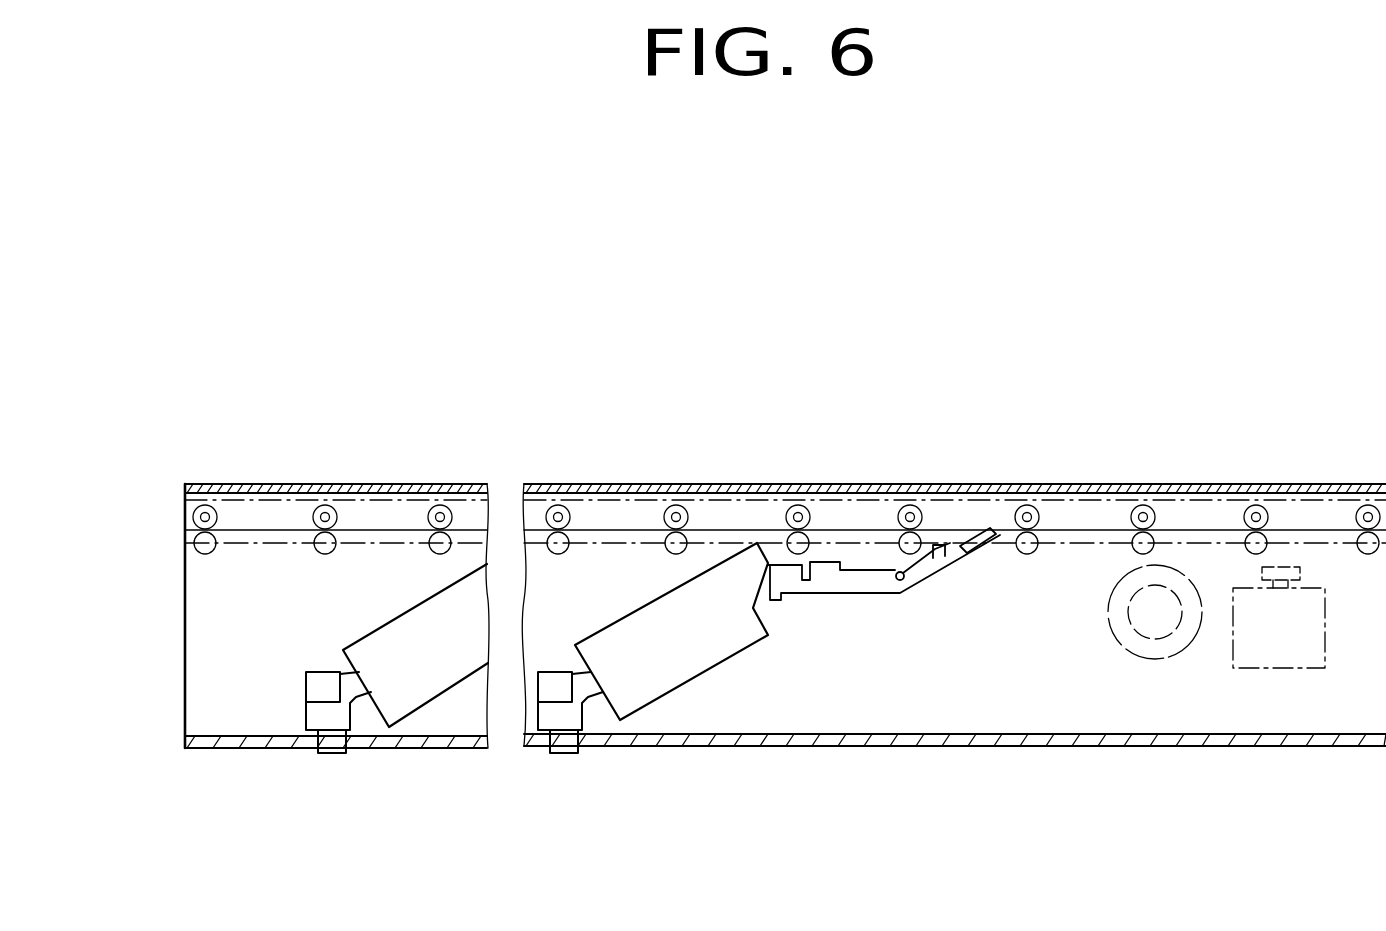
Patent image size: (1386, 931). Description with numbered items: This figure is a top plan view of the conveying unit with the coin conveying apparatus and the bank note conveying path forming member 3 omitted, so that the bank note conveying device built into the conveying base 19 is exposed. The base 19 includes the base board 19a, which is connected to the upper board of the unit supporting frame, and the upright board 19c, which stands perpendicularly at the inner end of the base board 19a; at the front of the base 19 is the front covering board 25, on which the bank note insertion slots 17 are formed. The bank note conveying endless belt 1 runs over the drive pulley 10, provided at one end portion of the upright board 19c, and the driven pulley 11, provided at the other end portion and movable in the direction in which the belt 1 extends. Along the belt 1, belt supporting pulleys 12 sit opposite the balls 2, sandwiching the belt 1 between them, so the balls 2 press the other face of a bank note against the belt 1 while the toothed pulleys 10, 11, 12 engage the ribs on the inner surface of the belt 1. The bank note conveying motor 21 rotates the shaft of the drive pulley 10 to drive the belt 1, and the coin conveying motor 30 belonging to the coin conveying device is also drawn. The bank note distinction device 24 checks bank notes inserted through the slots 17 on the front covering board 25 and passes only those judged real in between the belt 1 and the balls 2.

The bank note conveying endless belt 1 is at (1053, 527).
The balls 2 is at (206, 554).
The bank note conveying path forming member 3 is at (1112, 541).
The drive pulley 10 is at (1361, 506).
The driven pulley 11 is at (210, 505).
The belt supporting pulleys 12 is at (447, 506).
The bank note insertion slots 17 is at (334, 756).
The conveying base 19 is at (680, 487).
The base board 19a is at (207, 678).
The upright board 19c is at (366, 487).
The bank note conveying motor 21 is at (1146, 660).
The bank note distinction device 24 is at (428, 686).
The front covering board 25 is at (230, 749).
The coin conveying motor 30 is at (1248, 669).